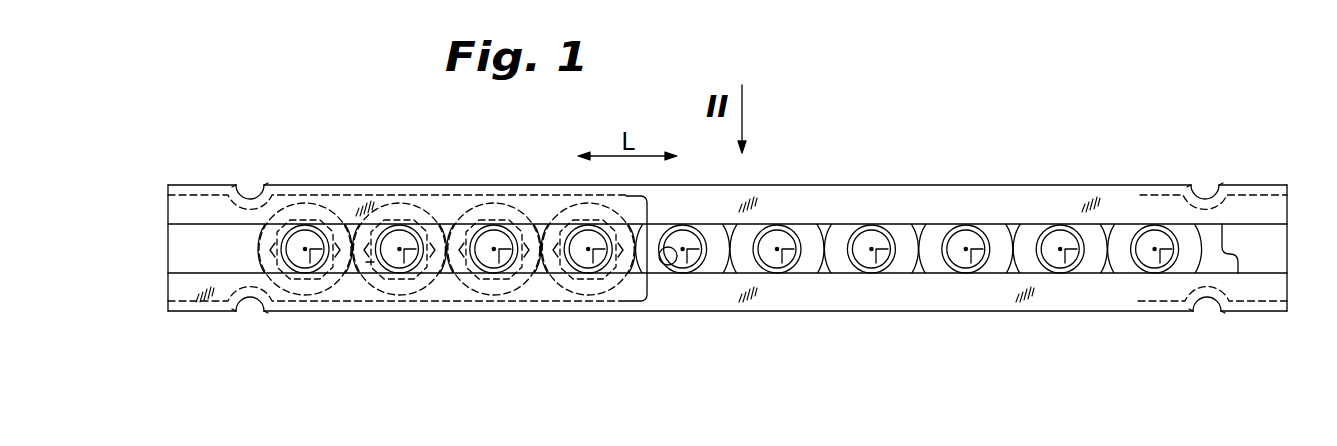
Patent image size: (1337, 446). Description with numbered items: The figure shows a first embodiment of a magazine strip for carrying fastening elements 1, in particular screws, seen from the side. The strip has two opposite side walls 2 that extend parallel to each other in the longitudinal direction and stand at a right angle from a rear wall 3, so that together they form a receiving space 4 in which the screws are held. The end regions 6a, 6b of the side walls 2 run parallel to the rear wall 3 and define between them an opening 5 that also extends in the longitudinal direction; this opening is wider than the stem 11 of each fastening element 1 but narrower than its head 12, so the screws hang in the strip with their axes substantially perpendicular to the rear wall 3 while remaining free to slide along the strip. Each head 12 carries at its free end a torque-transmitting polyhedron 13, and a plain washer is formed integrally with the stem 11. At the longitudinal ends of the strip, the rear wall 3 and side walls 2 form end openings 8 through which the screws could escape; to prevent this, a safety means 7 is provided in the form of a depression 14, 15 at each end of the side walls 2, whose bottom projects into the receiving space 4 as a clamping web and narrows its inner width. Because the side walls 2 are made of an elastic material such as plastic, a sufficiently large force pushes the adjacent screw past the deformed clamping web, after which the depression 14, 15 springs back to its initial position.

The fastening element 1 is at (635, 243).
The side wall 2 is at (1018, 182).
The rear wall 3 is at (1268, 245).
The receiving space 4 is at (677, 267).
The opening 5 is at (1238, 263).
The end region of side wall 6a is at (190, 220).
The end region of side wall 6b is at (190, 274).
The safety means 7 is at (244, 164).
The end opening 8 is at (182, 246).
The stem 11 is at (416, 256).
The head 12 is at (437, 232).
The polyhedron 13 is at (364, 282).
The depression 14 is at (251, 197).
The depression 15 is at (1207, 198).